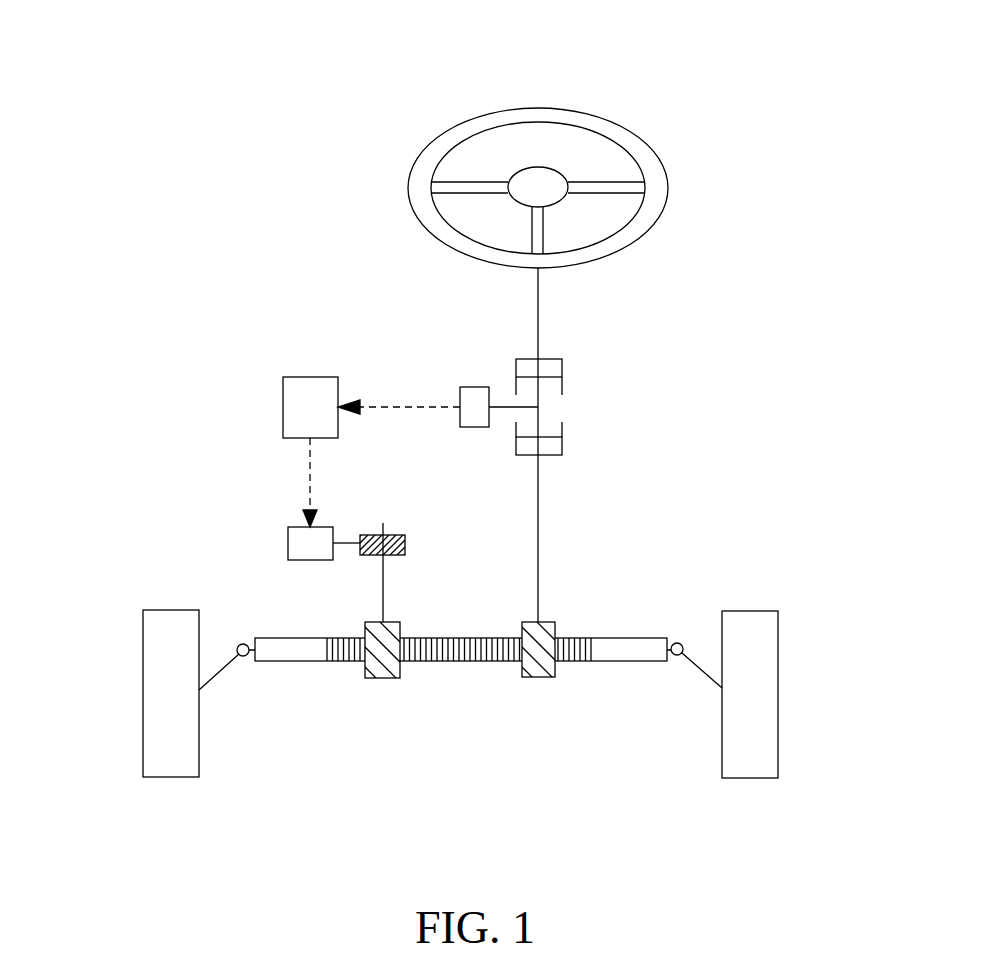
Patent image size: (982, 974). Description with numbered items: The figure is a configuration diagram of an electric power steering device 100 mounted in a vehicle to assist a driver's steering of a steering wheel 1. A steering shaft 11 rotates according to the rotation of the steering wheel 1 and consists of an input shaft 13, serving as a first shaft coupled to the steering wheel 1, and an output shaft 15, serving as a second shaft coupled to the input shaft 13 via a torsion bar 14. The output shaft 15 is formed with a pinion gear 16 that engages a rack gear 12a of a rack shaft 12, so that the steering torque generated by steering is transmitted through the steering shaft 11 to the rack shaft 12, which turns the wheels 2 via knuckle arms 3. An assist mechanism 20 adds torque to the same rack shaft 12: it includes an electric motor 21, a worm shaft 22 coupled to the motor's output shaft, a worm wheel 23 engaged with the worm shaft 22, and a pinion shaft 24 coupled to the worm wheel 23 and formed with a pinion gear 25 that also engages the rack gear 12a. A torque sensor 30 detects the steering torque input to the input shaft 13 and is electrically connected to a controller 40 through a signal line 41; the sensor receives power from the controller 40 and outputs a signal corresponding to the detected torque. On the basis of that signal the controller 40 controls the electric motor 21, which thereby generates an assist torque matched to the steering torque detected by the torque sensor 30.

The electric power steering device 100 is at (728, 212).
The steering wheel 1 is at (593, 123).
The steering shaft 11 is at (540, 343).
The input shaft 13 is at (540, 310).
The torsion bar 14 is at (541, 413).
The output shaft 15 is at (541, 512).
The pinion gear 16 is at (548, 677).
The rack shaft 12 is at (643, 650).
The rack gear 12a is at (460, 661).
The wheels 2 is at (150, 712).
The knuckle arms 3 is at (223, 672).
The assist mechanism 20 is at (355, 522).
The electric motor 21 is at (310, 560).
The worm shaft 22 is at (350, 548).
The worm wheel 23 is at (407, 541).
The pinion shaft 24 is at (385, 575).
The pinion gear 25 is at (390, 678).
The torque sensor 30 is at (475, 387).
The controller 40 is at (297, 377).
The signal line 41 is at (408, 405).